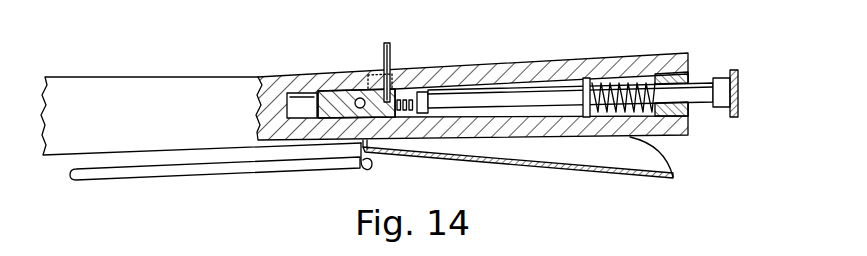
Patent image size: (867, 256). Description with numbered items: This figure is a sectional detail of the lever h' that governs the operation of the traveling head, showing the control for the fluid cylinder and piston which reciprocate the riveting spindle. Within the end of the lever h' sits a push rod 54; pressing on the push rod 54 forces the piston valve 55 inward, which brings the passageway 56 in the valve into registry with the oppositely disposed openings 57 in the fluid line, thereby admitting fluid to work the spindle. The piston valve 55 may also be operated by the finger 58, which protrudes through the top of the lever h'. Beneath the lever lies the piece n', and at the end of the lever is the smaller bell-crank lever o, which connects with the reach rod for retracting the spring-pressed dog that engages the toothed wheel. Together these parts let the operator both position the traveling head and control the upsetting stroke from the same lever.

The slide body h' is at (364, 85).
The plate n' is at (221, 175).
The bell-crank lever o is at (540, 170).
The push rod 54 is at (718, 78).
The piston valve 55 is at (326, 95).
The passageway 56 is at (362, 98).
The openings 57 is at (335, 100).
The finger 58 is at (388, 44).